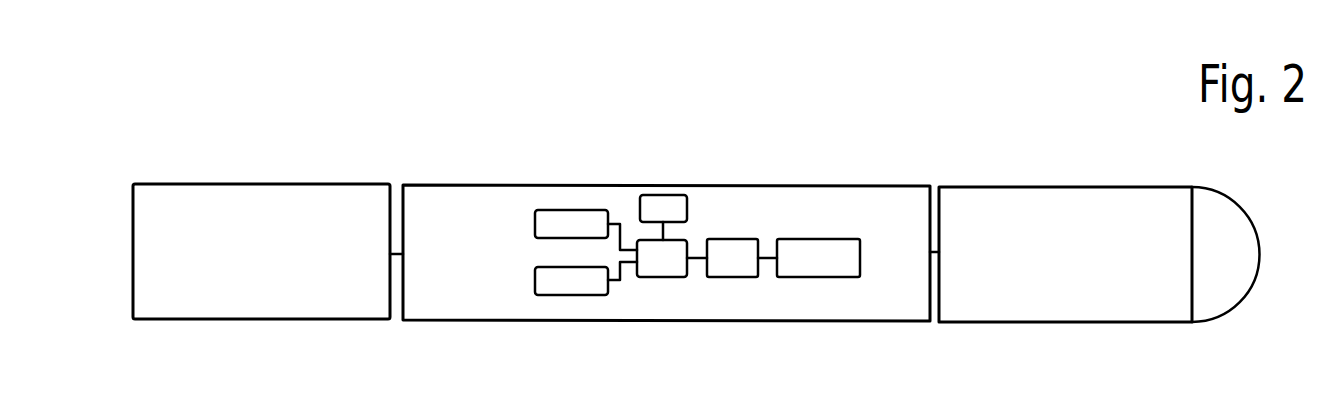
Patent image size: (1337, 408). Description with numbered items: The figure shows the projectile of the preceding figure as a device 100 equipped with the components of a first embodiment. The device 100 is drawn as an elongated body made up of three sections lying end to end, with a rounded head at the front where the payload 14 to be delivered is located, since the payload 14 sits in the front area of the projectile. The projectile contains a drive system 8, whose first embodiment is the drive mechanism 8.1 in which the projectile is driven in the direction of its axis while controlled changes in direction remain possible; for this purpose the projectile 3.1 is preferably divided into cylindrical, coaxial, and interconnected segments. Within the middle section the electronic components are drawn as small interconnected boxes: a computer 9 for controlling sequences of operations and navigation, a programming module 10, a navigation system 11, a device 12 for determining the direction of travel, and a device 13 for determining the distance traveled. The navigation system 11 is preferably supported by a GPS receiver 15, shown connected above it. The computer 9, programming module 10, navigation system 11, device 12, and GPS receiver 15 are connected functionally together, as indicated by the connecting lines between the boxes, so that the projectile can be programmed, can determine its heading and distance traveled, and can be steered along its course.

The device 100 is at (1029, 110).
The drive system 8 is at (712, 164).
The drive system first embodiment 8.1 is at (273, 181).
The projectile 3.1 is at (735, 321).
The computer 9 is at (745, 248).
The programming module 10 is at (843, 252).
The navigation system 11 is at (660, 262).
The device for determining the direction of travel 12 is at (568, 217).
The device for determining the distance traveled 13 is at (570, 285).
The payload 14 is at (1095, 275).
The GPS receiver 15 is at (655, 203).